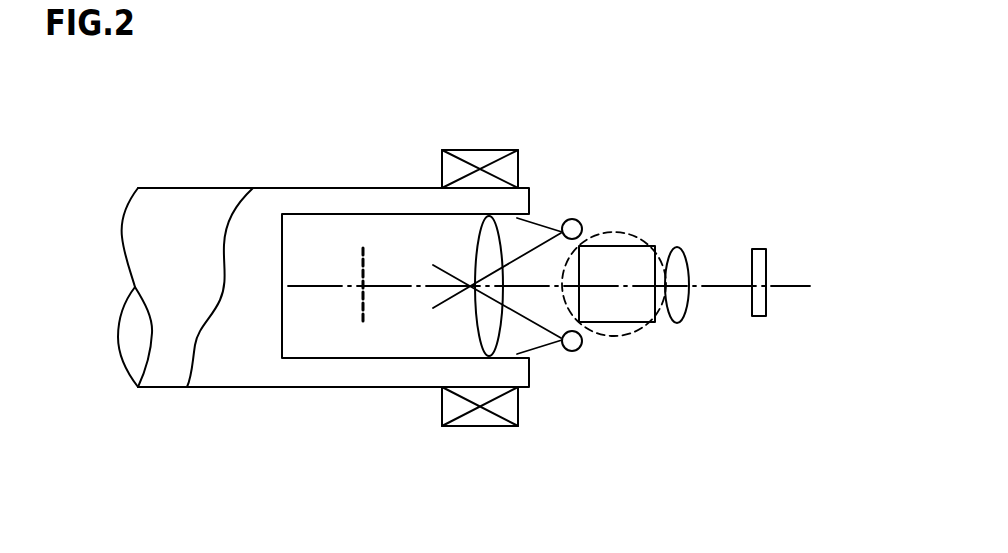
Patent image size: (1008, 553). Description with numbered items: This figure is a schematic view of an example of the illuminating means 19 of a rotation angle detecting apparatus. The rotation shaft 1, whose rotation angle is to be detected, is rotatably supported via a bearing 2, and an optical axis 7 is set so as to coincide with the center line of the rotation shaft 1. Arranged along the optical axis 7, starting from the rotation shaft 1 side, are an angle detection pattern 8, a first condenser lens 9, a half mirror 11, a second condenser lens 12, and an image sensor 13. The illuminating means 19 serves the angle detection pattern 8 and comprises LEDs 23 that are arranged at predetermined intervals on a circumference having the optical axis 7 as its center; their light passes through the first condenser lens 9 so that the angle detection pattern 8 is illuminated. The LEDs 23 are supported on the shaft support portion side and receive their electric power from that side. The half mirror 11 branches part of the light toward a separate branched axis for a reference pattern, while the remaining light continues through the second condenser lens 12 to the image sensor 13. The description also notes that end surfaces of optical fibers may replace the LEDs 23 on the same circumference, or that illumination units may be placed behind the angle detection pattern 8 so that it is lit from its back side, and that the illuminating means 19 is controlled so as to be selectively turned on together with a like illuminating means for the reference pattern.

The rotation shaft 1 is at (195, 186).
The bearing 2 is at (485, 149).
The optical axis 7 is at (790, 280).
The angle detection pattern 8 is at (363, 311).
The first condenser lens 9 is at (474, 325).
The half mirror 11 is at (638, 245).
The second condenser lens 12 is at (673, 323).
The image sensor 13 is at (757, 316).
The illuminating means 19 is at (596, 218).
The LEDs 23 is at (578, 219).